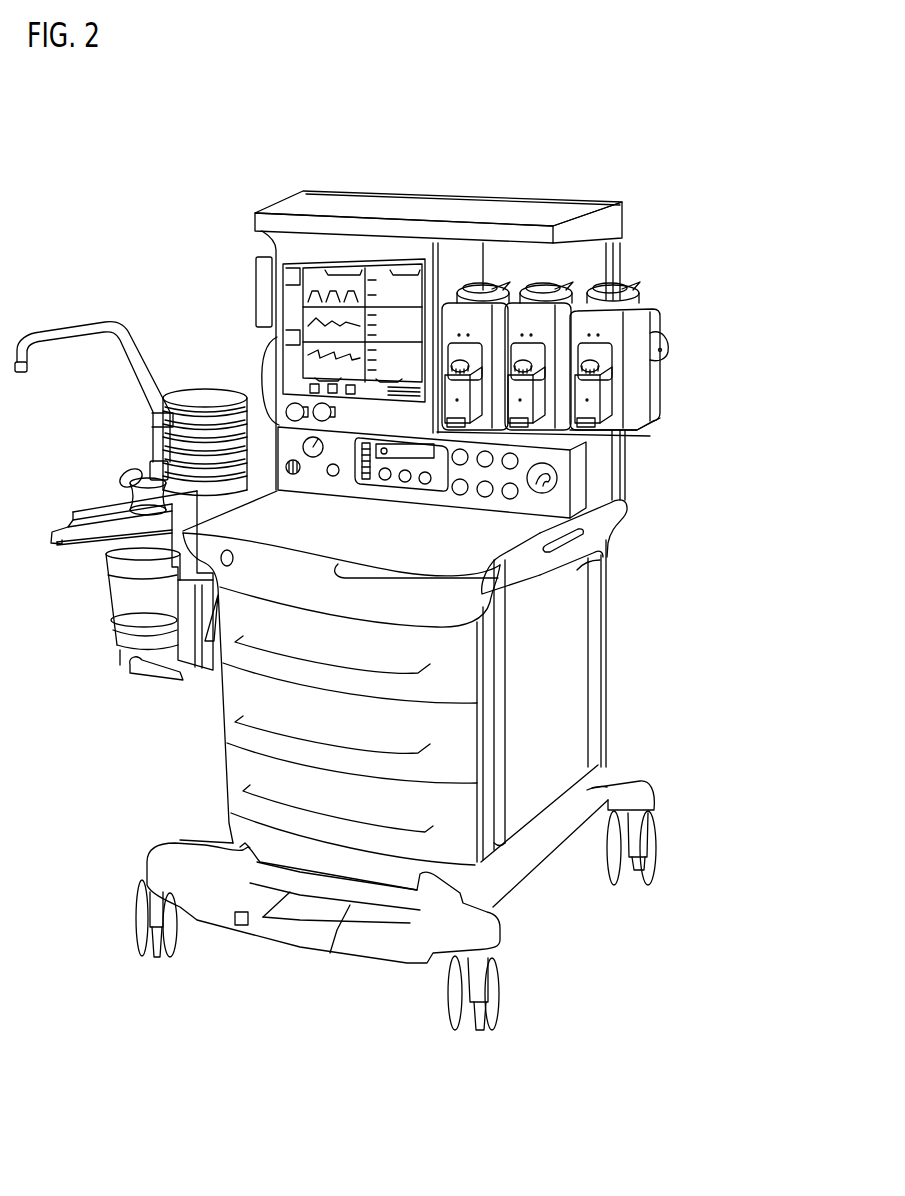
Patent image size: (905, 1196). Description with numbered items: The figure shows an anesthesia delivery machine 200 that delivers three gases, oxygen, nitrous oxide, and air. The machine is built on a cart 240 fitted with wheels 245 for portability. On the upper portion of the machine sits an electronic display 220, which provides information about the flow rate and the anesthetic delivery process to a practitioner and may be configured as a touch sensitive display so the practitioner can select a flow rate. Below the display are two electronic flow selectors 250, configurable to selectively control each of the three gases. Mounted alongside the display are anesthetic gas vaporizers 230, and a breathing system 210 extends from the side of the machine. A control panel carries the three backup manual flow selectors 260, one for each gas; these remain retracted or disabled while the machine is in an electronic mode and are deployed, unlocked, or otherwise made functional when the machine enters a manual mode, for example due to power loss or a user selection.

The anesthesia delivery machine 200 is at (675, 38).
The breathing system 210 is at (84, 309).
The electronic display 220 is at (279, 262).
The anesthetic gas vaporizers 230 is at (660, 283).
The cart 240 is at (606, 620).
The wheels 245 is at (614, 884).
The electronic flow selectors 250 is at (286, 402).
The backup manual flow selectors 260 is at (406, 496).